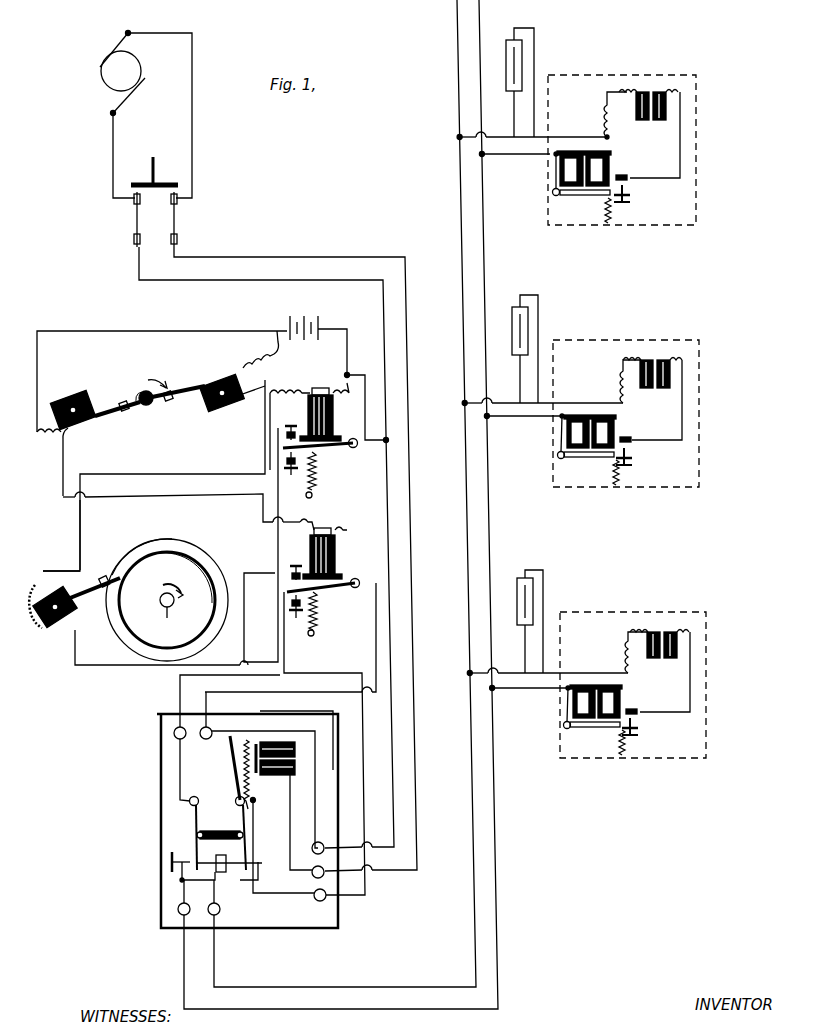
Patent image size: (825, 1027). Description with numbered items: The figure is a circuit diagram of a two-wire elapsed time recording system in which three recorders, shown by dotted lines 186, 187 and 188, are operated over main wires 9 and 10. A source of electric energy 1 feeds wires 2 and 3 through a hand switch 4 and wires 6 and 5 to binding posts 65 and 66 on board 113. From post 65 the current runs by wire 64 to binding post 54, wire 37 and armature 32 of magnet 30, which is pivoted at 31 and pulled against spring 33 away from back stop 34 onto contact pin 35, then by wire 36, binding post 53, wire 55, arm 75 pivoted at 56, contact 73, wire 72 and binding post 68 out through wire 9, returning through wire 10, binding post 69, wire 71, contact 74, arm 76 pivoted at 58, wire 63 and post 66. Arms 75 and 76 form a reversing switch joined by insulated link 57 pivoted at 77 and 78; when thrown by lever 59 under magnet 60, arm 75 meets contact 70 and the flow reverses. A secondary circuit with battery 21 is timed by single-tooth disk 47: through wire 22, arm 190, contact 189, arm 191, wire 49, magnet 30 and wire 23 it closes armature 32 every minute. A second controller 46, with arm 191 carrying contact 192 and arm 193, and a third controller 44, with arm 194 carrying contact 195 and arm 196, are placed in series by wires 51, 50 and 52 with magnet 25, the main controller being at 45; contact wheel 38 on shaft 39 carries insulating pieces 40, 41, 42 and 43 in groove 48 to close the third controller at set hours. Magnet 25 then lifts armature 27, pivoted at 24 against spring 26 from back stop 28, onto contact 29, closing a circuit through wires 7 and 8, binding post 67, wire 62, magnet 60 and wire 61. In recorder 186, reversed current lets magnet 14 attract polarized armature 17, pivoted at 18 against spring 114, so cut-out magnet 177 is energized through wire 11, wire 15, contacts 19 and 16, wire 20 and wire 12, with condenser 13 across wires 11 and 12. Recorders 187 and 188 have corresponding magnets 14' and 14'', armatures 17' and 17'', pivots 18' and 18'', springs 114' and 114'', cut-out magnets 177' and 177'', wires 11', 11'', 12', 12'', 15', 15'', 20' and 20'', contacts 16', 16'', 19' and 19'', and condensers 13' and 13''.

The source of electric energy 1 is at (113, 68).
The plus-pole wire 2 is at (110, 147).
The negative-pole wire 3 is at (192, 150).
The hand switch 4 is at (178, 222).
The circuit wire 5 is at (305, 258).
The circuit wire 6 is at (230, 282).
The wire 7 is at (372, 445).
The wire 8 is at (290, 480).
The main wire 9 is at (460, 205).
The main wire 10 is at (485, 243).
The wire 11 is at (549, 657).
The wire 12 is at (531, 702).
The condenser 13 is at (518, 617).
The magnet 14 is at (614, 699).
The wire 15 is at (713, 667).
The contact 16 is at (644, 733).
The polarized armature 17 is at (595, 739).
The pivot 18 is at (555, 739).
The contact 19 is at (655, 699).
The wire 20 is at (551, 712).
The battery 21 is at (318, 316).
The wire 22 is at (148, 330).
The wire 23 is at (348, 360).
The pivot 24 is at (352, 450).
The magnet 25 is at (333, 420).
The spring 26 is at (320, 485).
The armature 27 is at (318, 453).
The back stop 28 is at (292, 472).
The contact 29 is at (292, 425).
The magnet 30 is at (336, 560).
The pivot 31 is at (354, 590).
The armature 32 is at (330, 602).
The spring 33 is at (323, 631).
The back stop 34 is at (296, 618).
The contact pin 35 is at (295, 565).
The wire 36 is at (248, 625).
The wire 37 is at (346, 650).
The contact wheel 38 is at (220, 537).
The shaft 39 is at (172, 610).
The contact piece 40 is at (158, 555).
The contact piece 41 is at (118, 605).
The contact piece 42 is at (122, 612).
The contact piece 43 is at (140, 670).
The third circuit controller 44 is at (48, 630).
The main circuit controller 45 is at (73, 392).
The second circuit controller 46 is at (212, 378).
The insulated disk 47 is at (145, 405).
The groove 48 is at (210, 575).
The wire 49 is at (122, 498).
The wire 50 is at (200, 477).
The wire 51 is at (275, 345).
The wire 52 is at (267, 410).
The binding post 53 is at (174, 737).
The binding post 54 is at (204, 740).
The wire 55 is at (178, 778).
The pivot 56 is at (190, 804).
The insulated link 57 is at (215, 830).
The pivot 58 is at (236, 800).
The lever 59 is at (226, 760).
The reversing-switch controlling magnet 60 is at (287, 765).
The wire 61 is at (275, 790).
The wire 62 is at (256, 823).
The wire 63 is at (296, 826).
The wire 64 is at (327, 810).
The binding post 65 is at (322, 843).
The binding post 66 is at (324, 875).
The binding post 67 is at (326, 898).
The binding post 68 is at (218, 914).
The binding post 69 is at (182, 915).
The contact 70 is at (170, 870).
The wire 71 is at (180, 882).
The wire 72 is at (196, 891).
The contact pin 73 is at (230, 840).
The contact 74 is at (258, 880).
The contact lever 75 is at (194, 852).
The contact lever 76 is at (249, 852).
The pivot 77 is at (198, 835).
The pivot 78 is at (235, 822).
The board 113 is at (282, 918).
The spring 114 is at (644, 758).
The cut-out magnet 177 is at (684, 667).
The elapsed time recorder 186 is at (706, 738).
The elapsed time recorder 187 is at (699, 467).
The elapsed time recorder 188 is at (696, 200).
The contact 189 is at (120, 410).
The arm 190 is at (100, 395).
The arm 191 is at (105, 418).
The contact point 192 is at (180, 415).
The arm 193 is at (188, 385).
The arm 194 is at (100, 590).
The contact 195 is at (90, 572).
The arm 196 is at (80, 580).
The condenser 13' is at (512, 349).
The wire 11' is at (544, 387).
The wire 12' is at (525, 432).
The magnet 14' is at (607, 427).
The wire 15' is at (707, 403).
The contact 16' is at (640, 463).
The polarized armature 17' is at (589, 469).
The pivot 18' is at (546, 470).
The contact 19' is at (644, 430).
The wire 20' is at (543, 441).
The spring 114' is at (639, 489).
The cut-out magnet 177' is at (680, 394).
The condenser 13'' is at (508, 82).
The wire 11'' is at (534, 121).
The wire 12'' is at (516, 171).
The magnet 14'' is at (602, 166).
The wire 15'' is at (706, 138).
The contact 16'' is at (638, 200).
The polarized armature 17'' is at (585, 208).
The pivot 18'' is at (542, 210).
The contact 19'' is at (644, 167).
The wire 20'' is at (535, 183).
The spring 114'' is at (635, 228).
The cut-out magnet 177'' is at (671, 130).